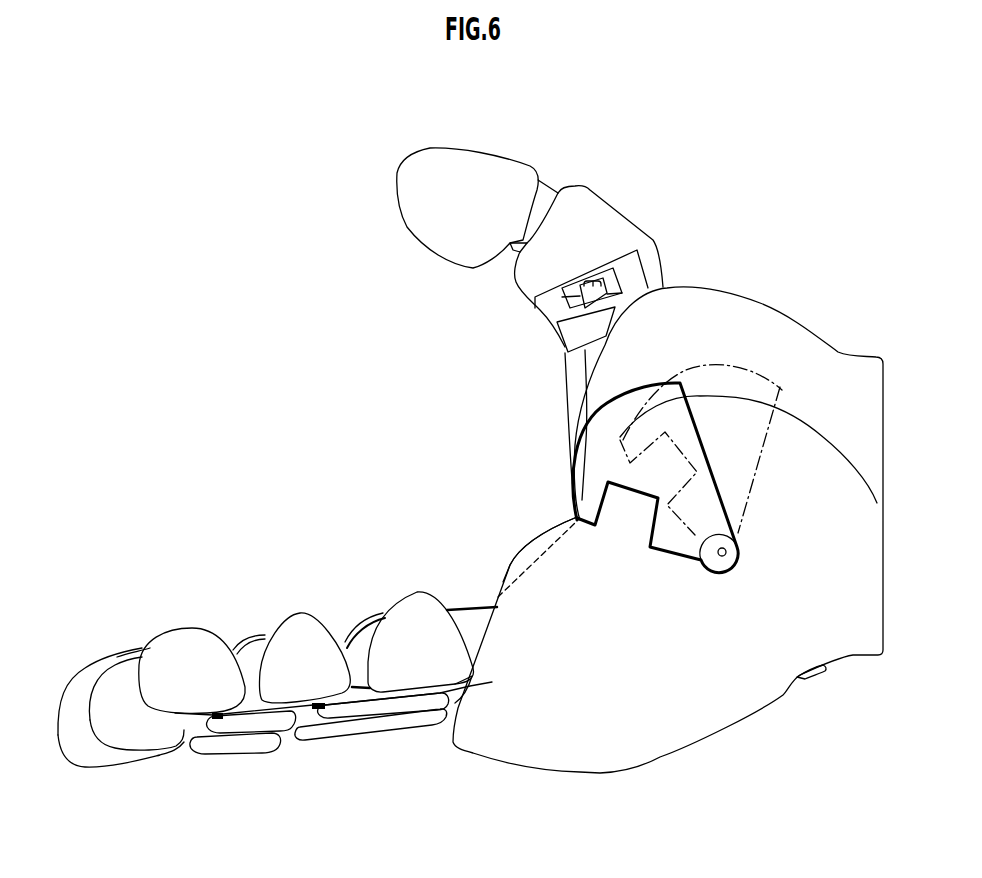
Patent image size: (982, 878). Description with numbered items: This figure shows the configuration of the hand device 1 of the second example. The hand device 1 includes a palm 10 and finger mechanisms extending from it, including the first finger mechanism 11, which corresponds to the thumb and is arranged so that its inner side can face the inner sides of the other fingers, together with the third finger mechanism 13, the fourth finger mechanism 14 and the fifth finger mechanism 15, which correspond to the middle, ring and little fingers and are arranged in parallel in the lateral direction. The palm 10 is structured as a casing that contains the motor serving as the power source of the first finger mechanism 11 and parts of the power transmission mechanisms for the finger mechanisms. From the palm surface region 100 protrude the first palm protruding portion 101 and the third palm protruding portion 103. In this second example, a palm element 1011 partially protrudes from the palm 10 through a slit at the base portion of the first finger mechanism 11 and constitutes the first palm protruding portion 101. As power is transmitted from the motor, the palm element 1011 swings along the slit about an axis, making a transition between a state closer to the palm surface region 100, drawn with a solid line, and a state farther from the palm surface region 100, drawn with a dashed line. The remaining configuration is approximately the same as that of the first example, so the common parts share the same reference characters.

The hand device 1 is at (668, 201).
The palm 10 is at (430, 475).
The first finger mechanism 11 is at (380, 169).
The third finger mechanism 13 is at (83, 777).
The fourth finger mechanism 14 is at (153, 758).
The fifth finger mechanism 15 is at (188, 618).
The palm surface region 100 is at (547, 555).
The first palm protruding portion 101 is at (572, 474).
The third palm protruding portion 103 is at (505, 560).
The palm element 1011 is at (722, 363).